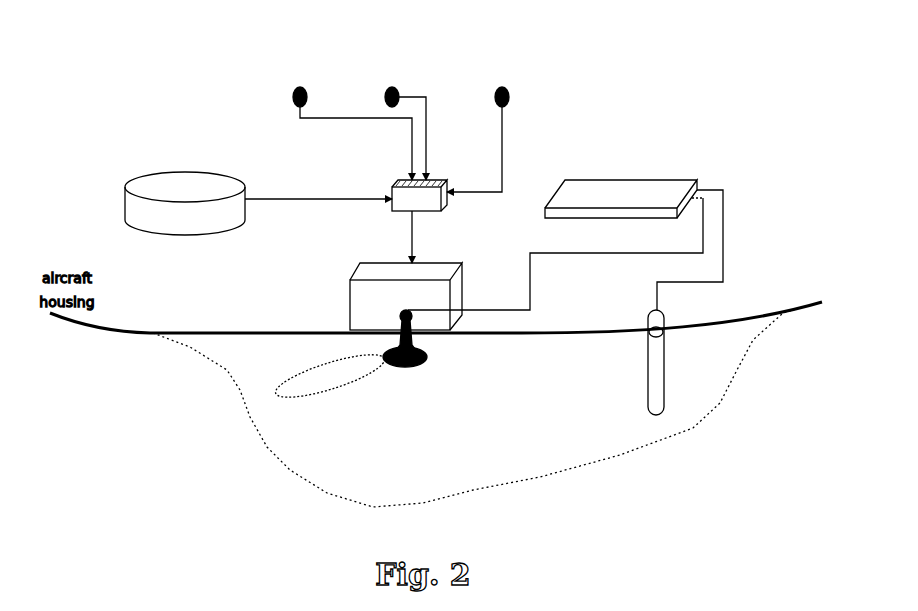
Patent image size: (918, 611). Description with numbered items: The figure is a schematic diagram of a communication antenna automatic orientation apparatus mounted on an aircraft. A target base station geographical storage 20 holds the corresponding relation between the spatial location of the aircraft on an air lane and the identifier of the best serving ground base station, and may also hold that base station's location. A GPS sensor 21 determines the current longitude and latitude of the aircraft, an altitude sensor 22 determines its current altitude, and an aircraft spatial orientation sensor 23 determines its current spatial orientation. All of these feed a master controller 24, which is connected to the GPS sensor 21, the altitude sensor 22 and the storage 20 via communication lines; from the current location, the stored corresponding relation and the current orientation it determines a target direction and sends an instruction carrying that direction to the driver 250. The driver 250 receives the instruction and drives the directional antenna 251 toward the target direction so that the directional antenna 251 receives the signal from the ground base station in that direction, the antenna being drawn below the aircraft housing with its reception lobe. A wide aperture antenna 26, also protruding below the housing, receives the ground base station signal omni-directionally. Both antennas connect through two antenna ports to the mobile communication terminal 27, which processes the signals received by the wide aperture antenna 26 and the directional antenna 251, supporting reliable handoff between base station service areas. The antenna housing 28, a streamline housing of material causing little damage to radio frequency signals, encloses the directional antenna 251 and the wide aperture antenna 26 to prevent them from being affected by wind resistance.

The target base station geographical storage 20 is at (239, 182).
The GPS sensor 21 is at (334, 108).
The altitude sensor 22 is at (493, 114).
The aircraft spatial orientation sensor 23 is at (392, 97).
The master controller 24 is at (379, 200).
The driver 250 is at (374, 296).
The directional antenna 251 is at (361, 365).
The wide aperture antenna 26 is at (602, 362).
The mobile communication terminal 27 is at (610, 212).
The antenna housing 28 is at (474, 408).